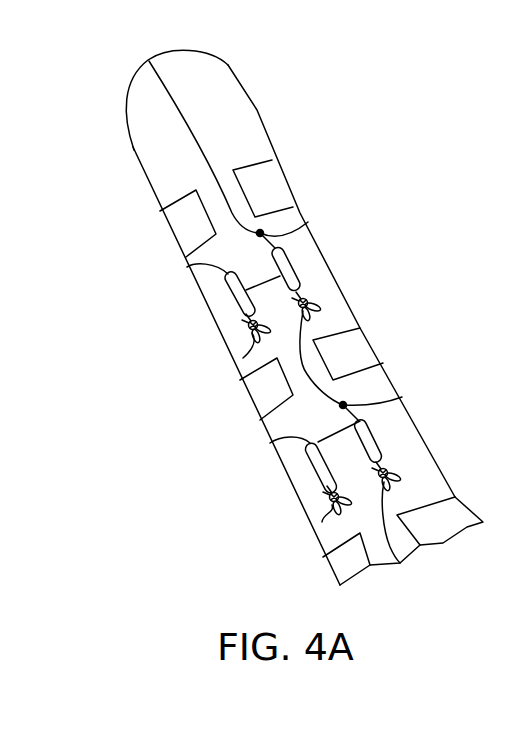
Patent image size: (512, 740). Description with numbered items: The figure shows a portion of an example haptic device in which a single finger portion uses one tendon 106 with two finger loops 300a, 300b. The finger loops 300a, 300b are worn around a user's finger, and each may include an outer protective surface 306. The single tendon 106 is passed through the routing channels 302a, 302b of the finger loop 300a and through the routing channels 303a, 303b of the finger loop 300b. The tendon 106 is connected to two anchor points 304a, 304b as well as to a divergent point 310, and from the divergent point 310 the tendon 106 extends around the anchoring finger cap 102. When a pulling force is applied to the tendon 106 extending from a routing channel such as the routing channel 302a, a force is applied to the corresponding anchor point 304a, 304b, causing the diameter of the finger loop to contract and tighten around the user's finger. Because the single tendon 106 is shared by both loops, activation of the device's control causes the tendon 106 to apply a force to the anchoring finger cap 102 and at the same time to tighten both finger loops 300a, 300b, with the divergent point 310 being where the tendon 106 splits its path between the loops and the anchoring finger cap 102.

The anchoring finger cap 102 is at (134, 101).
The tendon 106 is at (197, 145).
The outer protective surface 306 is at (256, 108).
The divergent point 310 is at (301, 215).
The finger loop 300a is at (270, 440).
The finger loop 300b is at (210, 292).
The routing channel 302a is at (373, 443).
The routing channel 302b is at (317, 470).
The routing channel 303a is at (297, 277).
The routing channel 303b is at (247, 313).
The anchor point 304a is at (320, 515).
The anchor point 304b is at (232, 347).